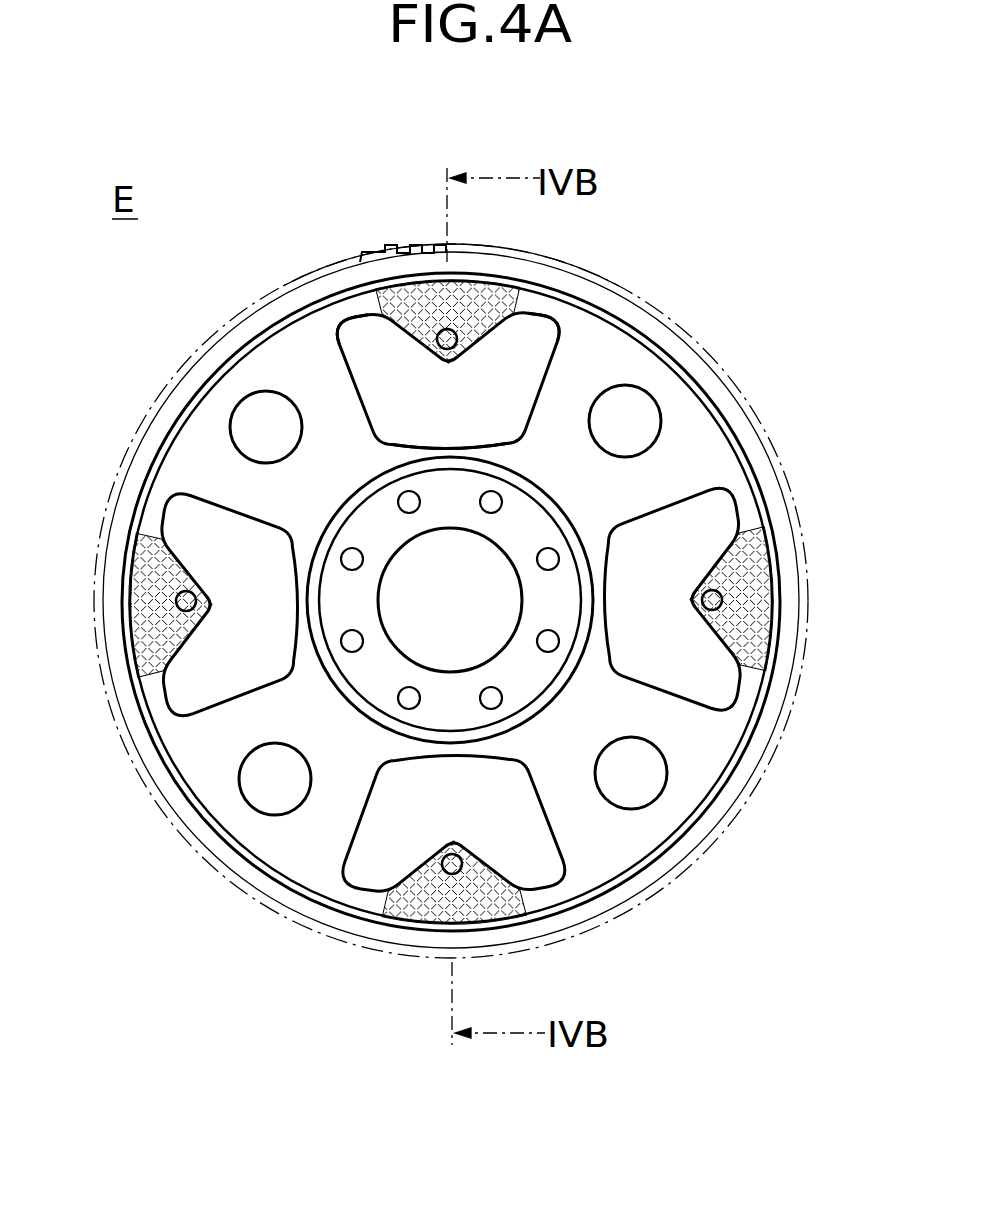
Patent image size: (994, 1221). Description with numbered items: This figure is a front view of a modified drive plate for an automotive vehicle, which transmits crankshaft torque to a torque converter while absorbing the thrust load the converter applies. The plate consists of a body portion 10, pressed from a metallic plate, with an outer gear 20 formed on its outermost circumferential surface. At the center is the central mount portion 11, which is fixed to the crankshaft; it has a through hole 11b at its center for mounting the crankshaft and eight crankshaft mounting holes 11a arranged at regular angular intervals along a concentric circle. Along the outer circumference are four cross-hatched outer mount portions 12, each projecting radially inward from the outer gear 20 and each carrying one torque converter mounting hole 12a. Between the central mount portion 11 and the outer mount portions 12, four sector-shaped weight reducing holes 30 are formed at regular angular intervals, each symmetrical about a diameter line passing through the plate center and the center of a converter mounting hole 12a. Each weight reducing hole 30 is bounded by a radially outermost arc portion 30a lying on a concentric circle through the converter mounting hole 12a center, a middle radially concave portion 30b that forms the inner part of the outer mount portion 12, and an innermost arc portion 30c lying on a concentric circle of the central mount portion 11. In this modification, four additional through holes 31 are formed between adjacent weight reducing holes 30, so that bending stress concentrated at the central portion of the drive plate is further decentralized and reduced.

The body portion 10 is at (812, 330).
The central mount portion 11 is at (537, 523).
The crankshaft mounting holes 11a is at (553, 640).
The through hole 11b is at (402, 633).
The outer mount portion 12 is at (377, 283).
The torque converter mounting hole 12a is at (446, 335).
The outer gear 20 is at (690, 330).
The weight reducing holes 30 is at (515, 400).
The radially outermost arc portion 30a is at (347, 322).
The middle radially concave portion 30b is at (515, 305).
The innermost arc portion 30c is at (446, 446).
The through holes 31 is at (250, 447).